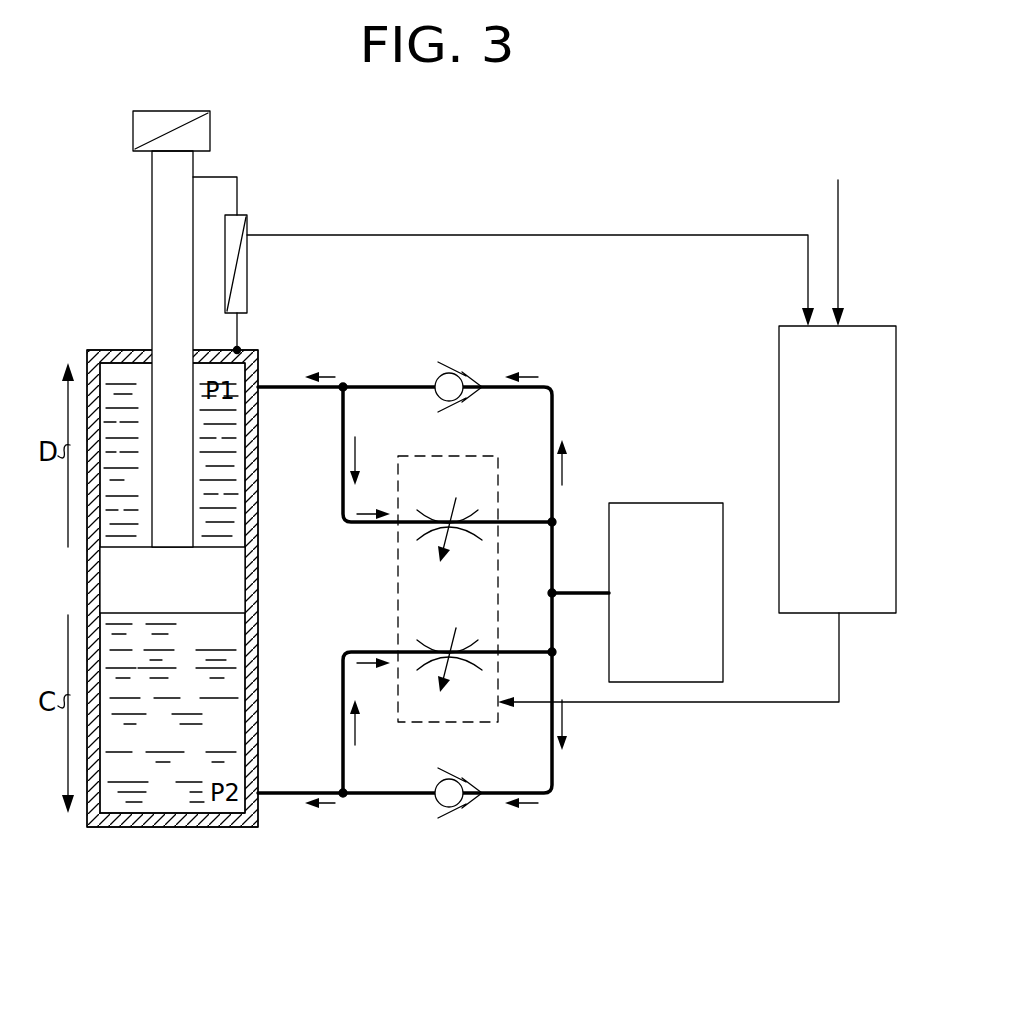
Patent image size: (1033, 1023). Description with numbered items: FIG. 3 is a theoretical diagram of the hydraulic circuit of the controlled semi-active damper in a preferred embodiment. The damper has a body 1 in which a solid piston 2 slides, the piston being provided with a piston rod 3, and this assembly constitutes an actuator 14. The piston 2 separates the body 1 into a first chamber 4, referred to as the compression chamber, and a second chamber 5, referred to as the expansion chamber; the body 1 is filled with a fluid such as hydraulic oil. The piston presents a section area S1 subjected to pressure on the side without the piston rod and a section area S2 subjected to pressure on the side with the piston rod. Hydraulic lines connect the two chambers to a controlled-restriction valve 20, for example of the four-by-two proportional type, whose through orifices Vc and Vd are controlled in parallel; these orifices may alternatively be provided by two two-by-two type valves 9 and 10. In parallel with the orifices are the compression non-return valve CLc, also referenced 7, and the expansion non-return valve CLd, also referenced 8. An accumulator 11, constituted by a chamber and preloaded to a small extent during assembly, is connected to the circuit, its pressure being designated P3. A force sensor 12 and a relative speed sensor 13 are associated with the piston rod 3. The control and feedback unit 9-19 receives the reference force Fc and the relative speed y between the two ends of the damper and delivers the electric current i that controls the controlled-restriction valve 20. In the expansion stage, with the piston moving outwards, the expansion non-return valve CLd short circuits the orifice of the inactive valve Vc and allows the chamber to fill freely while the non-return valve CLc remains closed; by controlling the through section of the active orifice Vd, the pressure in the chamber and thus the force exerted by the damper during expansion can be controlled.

The body 1 is at (252, 726).
The solid piston 2 is at (220, 572).
The piston rod 3 is at (168, 224).
The compression chamber 4 is at (154, 792).
The expansion chamber 5 is at (121, 378).
The compression non-return valve 7 is at (458, 378).
The expansion non-return valve 8 is at (458, 805).
The 2/2 type valve 9 is at (432, 518).
The 2/2 type valve 10 is at (434, 634).
The accumulator 11 is at (655, 517).
The force sensor 12 is at (200, 133).
The relative speed sensor 13 is at (245, 282).
The actuator 14 is at (272, 476).
The controlled-restriction valve 20 is at (398, 594).
The control and feedback unit 9-19 is at (803, 408).
The pressure in the accumulator P3 is at (577, 592).
The section area of the piston on the side without a piston rod S1 is at (218, 546).
The section area of the piston on the side with a piston rod S2 is at (197, 613).
The compression non-return valve CLc is at (445, 382).
The expansion non-return valve CLd is at (446, 800).
The through orifice of the controlled-restriction valve Vc is at (466, 700).
The through orifice of the controlled-restriction valve Vd is at (478, 474).
The reference force Fc is at (840, 210).
The relative speed y is at (806, 266).
The electric current i is at (758, 702).